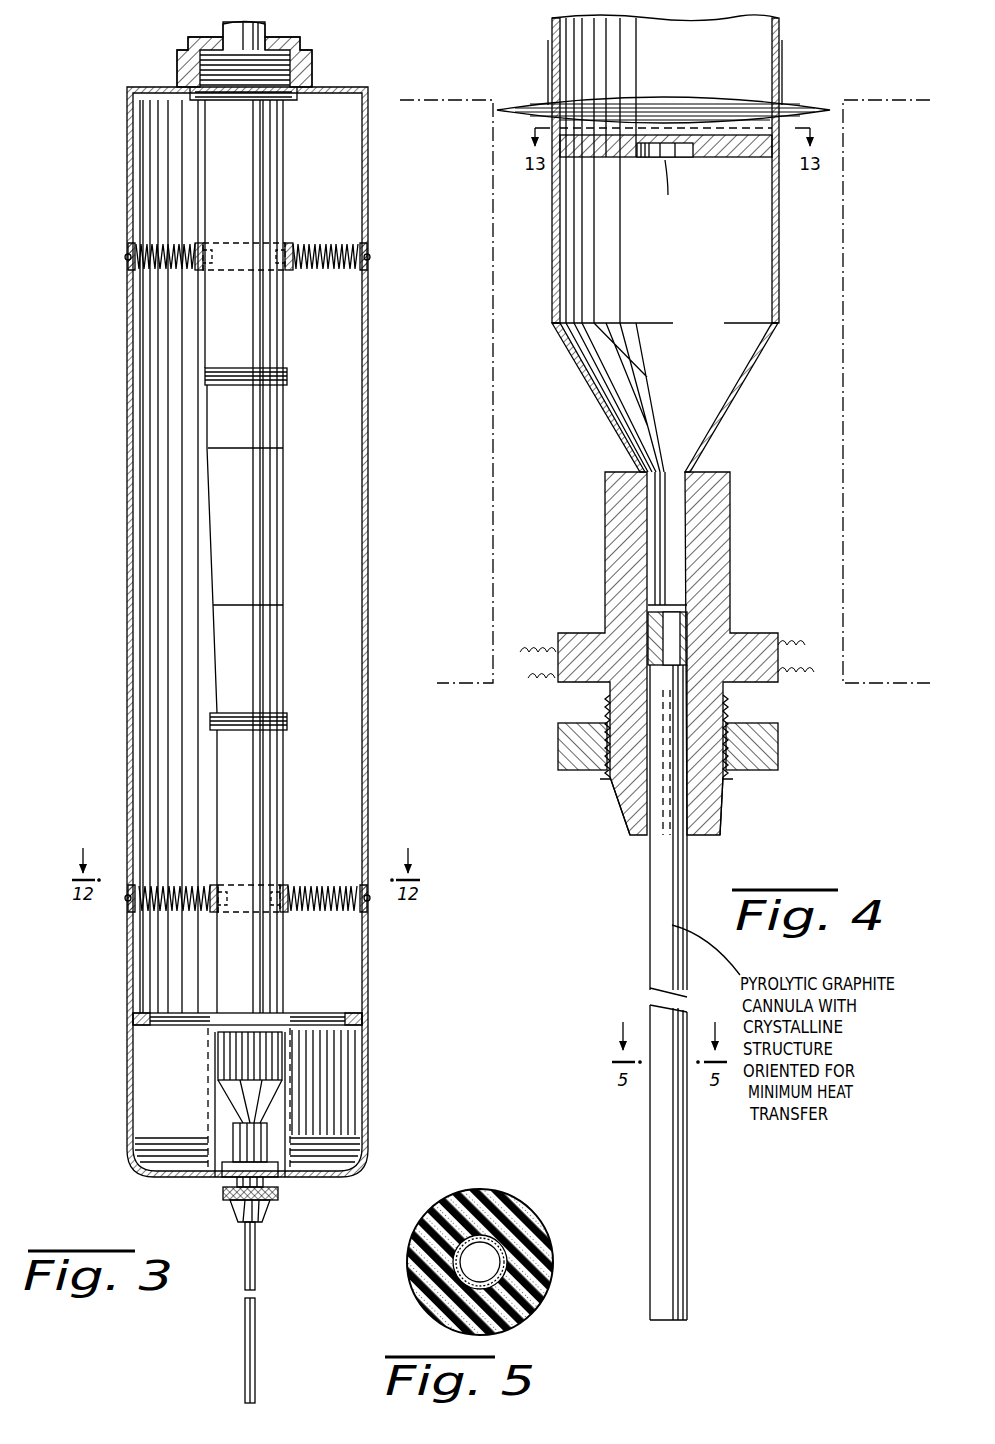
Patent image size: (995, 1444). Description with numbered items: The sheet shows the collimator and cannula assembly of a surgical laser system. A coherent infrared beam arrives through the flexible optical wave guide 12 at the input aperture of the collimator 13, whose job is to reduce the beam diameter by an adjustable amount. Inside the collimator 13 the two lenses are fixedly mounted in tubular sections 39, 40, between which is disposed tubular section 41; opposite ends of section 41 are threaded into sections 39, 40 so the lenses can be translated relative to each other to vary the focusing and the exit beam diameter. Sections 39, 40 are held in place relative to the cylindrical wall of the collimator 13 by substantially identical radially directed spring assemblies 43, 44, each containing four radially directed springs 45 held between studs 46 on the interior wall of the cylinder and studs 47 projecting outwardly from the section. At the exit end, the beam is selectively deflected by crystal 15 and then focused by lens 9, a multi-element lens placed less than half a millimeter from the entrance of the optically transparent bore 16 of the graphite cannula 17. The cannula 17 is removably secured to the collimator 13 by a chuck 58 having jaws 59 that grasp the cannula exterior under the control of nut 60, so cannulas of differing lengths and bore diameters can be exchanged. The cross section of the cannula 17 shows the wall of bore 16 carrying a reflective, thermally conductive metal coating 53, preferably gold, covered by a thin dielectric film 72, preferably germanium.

In FIG. 4, the focusing lens 9 is at (650, 592).
In FIG. 3, the flexible optical wave guide 12 is at (265, 25).
In FIG. 3, the collimator 13 is at (375, 508).
In FIG. 4, the crystal 15 is at (690, 133).
In FIG. 4, the bore 16 is at (655, 628).
In FIG. 5, the bore 16 is at (432, 1280).
In FIG. 3, the graphite cannula 17 is at (255, 1335).
In FIG. 4, the graphite cannula 17 is at (650, 1010).
In FIG. 5, the graphite cannula 17 is at (510, 1200).
In FIG. 3, the tubular section 39 is at (272, 358).
In FIG. 3, the tubular section 40 is at (285, 755).
In FIG. 3, the tubular section 41 is at (213, 537).
In FIG. 3, the spring assembly 43 is at (162, 248).
In FIG. 3, the spring assembly 44 is at (175, 885).
In FIG. 3, the radially directed spring 45 is at (180, 268).
In FIG. 3, the stud 46 is at (355, 248).
In FIG. 3, the stud 47 is at (210, 270).
In FIG. 5, the coating 53 is at (463, 1215).
In FIG. 3, the chuck 58 is at (231, 1228).
In FIG. 4, the chuck 58 is at (733, 800).
In FIG. 3, the jaws 59 is at (265, 1218).
In FIG. 4, the jaws 59 is at (618, 800).
In FIG. 3, the nut 60 is at (277, 1200).
In FIG. 4, the nut 60 is at (778, 740).
In FIG. 5, the dielectric film 72 is at (508, 1263).